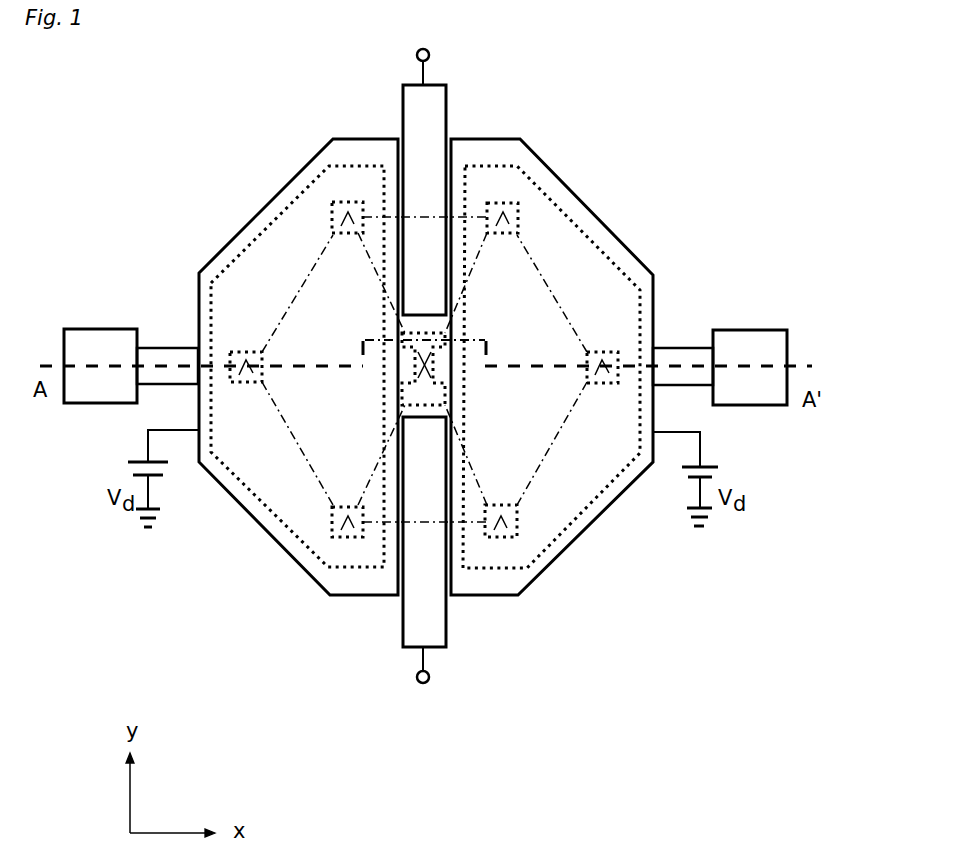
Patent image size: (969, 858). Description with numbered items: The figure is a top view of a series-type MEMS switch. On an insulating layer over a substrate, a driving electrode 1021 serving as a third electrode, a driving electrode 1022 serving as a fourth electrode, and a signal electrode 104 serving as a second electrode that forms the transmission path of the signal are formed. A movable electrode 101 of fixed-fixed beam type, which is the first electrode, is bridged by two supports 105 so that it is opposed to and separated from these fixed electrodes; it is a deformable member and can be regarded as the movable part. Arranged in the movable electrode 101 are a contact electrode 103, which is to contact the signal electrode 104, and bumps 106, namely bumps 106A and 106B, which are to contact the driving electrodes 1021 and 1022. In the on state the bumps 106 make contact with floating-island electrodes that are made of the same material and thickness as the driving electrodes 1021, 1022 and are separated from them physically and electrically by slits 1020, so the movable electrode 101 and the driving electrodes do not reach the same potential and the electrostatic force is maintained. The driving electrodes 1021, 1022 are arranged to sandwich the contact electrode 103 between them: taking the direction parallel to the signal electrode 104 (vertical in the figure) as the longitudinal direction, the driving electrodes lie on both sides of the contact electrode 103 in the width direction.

The movable electrode 101 is at (223, 347).
The contact electrode 103 is at (430, 335).
The signal electrode 104 is at (422, 123).
The supports 105 is at (98, 347).
The bumps 106 is at (153, 82).
The bump 106A is at (238, 353).
The bump 106B is at (345, 215).
The slits 1020 is at (517, 217).
The driving electrode 1021 is at (273, 515).
The driving electrode 1022 is at (580, 515).